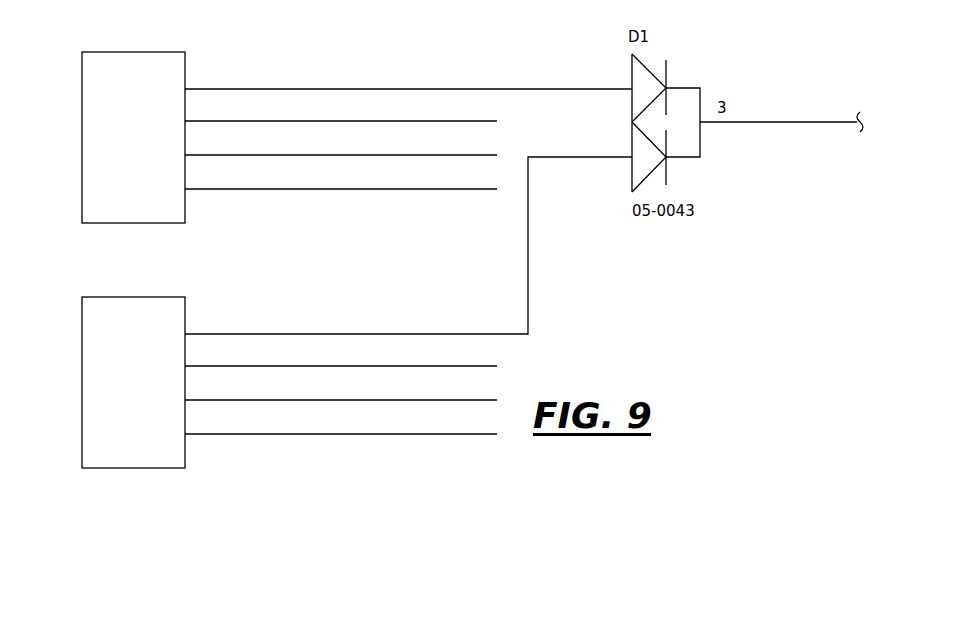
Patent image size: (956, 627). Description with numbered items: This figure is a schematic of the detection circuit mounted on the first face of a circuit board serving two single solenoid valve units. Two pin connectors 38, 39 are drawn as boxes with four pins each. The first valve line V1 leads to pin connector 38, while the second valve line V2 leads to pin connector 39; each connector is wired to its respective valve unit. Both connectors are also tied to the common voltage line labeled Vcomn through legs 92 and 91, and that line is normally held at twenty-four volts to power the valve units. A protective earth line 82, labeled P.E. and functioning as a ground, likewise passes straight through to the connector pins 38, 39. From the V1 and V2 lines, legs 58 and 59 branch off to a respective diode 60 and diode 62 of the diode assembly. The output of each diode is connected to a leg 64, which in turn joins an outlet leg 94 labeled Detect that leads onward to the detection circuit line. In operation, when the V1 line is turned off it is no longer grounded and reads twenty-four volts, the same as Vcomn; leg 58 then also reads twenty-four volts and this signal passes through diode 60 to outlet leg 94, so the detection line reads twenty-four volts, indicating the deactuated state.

The pin connector 38 is at (133, 52).
The pin connector 39 is at (133, 297).
The leg 58 is at (255, 88).
The leg 59 is at (266, 333).
The protective earth line 82 is at (238, 155).
The leg 92 is at (252, 189).
The leg 91 is at (258, 434).
The diode 60 is at (641, 81).
The diode 62 is at (638, 167).
The leg 64 is at (687, 88).
The outlet leg 94 is at (838, 125).